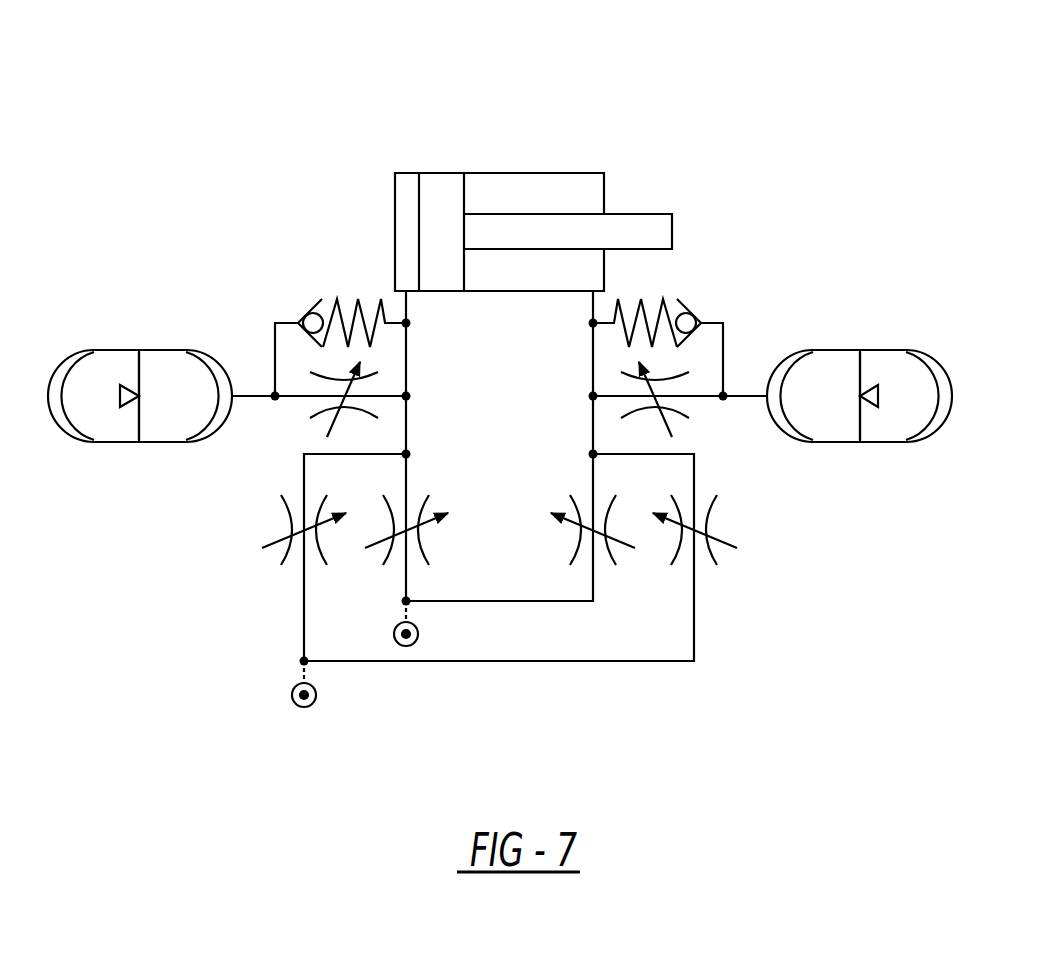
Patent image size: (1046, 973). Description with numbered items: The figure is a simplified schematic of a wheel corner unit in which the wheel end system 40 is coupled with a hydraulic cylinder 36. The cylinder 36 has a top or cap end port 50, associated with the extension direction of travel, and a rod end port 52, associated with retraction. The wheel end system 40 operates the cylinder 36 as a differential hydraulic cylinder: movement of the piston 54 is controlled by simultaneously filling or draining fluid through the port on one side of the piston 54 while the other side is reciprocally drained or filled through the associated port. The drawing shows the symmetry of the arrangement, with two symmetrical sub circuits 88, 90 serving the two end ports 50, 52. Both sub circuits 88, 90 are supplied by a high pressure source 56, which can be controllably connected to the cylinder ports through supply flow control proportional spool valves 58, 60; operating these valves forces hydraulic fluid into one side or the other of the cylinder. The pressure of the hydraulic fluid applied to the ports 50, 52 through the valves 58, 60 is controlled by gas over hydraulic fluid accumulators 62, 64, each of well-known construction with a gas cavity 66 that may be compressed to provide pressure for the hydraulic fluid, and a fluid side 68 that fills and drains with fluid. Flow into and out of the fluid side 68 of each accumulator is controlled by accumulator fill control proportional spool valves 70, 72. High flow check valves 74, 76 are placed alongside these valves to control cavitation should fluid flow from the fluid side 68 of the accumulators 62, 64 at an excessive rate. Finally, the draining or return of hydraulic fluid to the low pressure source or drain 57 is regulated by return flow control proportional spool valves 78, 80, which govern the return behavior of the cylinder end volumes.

The wheel end system 40 is at (556, 62).
The hydraulic cylinder 36 is at (530, 173).
The piston 54 is at (440, 190).
The top or cap end port 50 is at (407, 292).
The rod end port 52 is at (593, 292).
The high flow check valve 74 is at (331, 302).
The high flow check valve 76 is at (668, 302).
The accumulator fill control proportional spool valve 70 is at (312, 412).
The accumulator fill control proportional spool valve 72 is at (688, 414).
The gas over hydraulic fluid accumulator 62 is at (127, 441).
The gas over hydraulic fluid accumulator 64 is at (935, 440).
The gas cavity 66 is at (68, 362).
The fluid side 68 is at (187, 362).
The supply flow control proportional spool valve 58 is at (282, 562).
The return flow control proportional spool valve 78 is at (420, 506).
The return flow control proportional spool valve 80 is at (614, 560).
The supply flow control proportional spool valve 60 is at (716, 560).
The high pressure source 56 is at (292, 696).
The low pressure source (drain) 57 is at (420, 632).
The sub circuit 88 is at (364, 692).
The sub circuit 90 is at (651, 692).